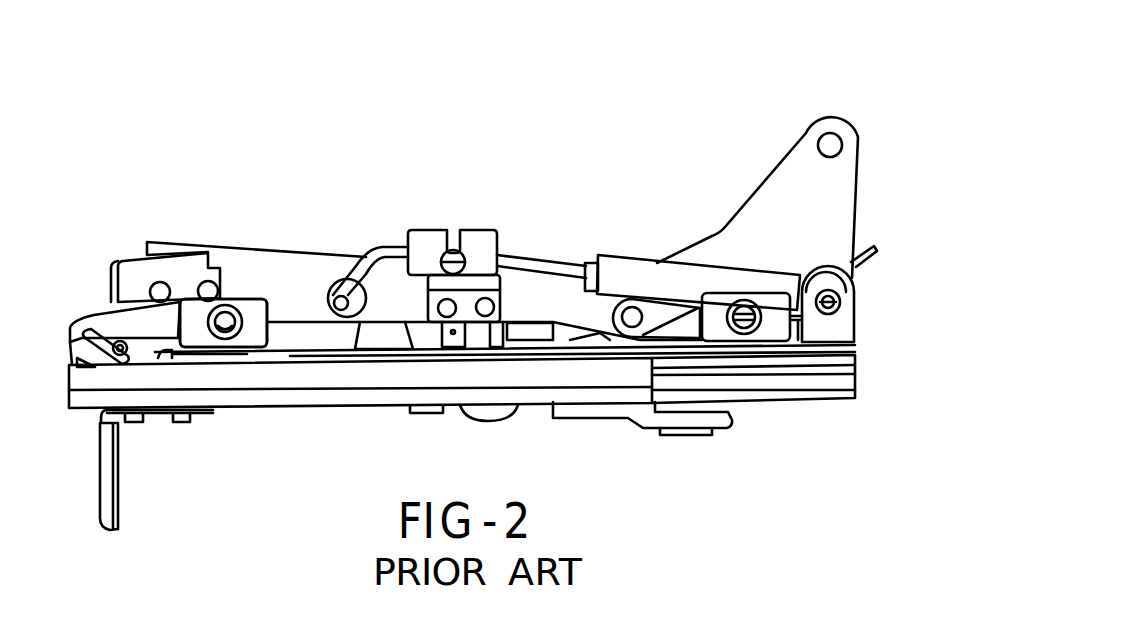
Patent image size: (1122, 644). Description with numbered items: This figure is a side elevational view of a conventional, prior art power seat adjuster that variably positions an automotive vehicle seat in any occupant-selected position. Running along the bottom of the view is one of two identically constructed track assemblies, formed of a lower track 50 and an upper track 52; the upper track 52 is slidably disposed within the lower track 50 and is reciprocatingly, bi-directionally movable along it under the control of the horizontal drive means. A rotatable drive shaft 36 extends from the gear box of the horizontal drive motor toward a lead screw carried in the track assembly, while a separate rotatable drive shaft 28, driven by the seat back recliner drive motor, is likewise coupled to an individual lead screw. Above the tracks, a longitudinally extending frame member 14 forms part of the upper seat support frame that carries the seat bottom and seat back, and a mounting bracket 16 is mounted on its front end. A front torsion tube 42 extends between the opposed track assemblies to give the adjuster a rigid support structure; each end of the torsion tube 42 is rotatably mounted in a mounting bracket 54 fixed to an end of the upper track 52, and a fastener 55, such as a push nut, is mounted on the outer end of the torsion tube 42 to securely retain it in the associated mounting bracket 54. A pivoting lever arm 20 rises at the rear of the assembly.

The frame member 14 is at (238, 260).
The mounting bracket 16 is at (124, 256).
The lever arm 20 is at (860, 145).
The rotatable drive shaft 28 is at (364, 254).
The rotatable drive shaft 36 is at (93, 330).
The front torsion tube 42 is at (240, 332).
The lower track 50 is at (370, 399).
The upper track 52 is at (801, 378).
The mounting bracket 54 is at (215, 408).
The fastener 55 is at (230, 334).